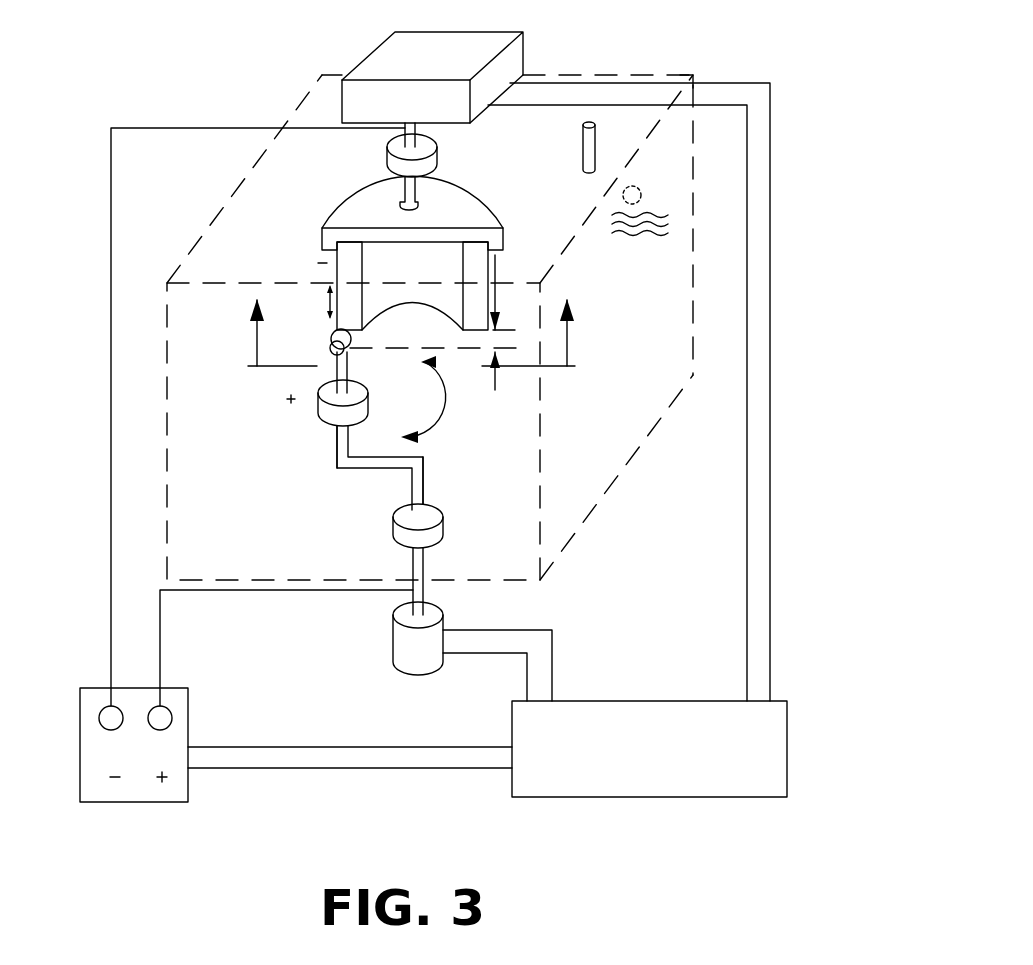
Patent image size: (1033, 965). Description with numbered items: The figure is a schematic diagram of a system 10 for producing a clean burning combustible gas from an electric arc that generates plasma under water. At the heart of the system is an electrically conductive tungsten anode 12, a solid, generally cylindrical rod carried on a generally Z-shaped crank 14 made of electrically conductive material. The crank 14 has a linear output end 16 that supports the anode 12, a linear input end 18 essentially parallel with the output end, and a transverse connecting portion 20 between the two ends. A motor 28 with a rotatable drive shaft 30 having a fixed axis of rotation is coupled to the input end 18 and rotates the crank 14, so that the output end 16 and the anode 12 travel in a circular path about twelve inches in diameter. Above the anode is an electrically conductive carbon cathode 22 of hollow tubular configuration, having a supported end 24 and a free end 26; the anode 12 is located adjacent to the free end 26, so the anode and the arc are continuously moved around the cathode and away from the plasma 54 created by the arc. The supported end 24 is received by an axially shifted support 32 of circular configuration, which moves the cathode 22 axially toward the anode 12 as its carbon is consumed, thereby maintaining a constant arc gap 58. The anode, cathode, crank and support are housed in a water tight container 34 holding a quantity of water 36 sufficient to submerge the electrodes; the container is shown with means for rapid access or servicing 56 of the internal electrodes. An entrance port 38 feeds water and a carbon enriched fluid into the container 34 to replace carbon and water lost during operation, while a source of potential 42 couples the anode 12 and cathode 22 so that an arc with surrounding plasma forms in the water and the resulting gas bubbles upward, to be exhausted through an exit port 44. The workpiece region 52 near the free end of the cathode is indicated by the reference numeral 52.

The system 10 is at (799, 113).
The anode 12 is at (443, 527).
The crank 14 is at (337, 465).
The output end 16 is at (427, 483).
The input end 18 is at (348, 368).
The connecting portion 20 is at (377, 468).
The cathode 22 is at (487, 204).
The supported end 24 is at (418, 204).
The free end 26 is at (387, 242).
The motor 28 is at (443, 625).
The drive shaft 30 is at (424, 566).
The support 32 is at (387, 145).
The container 34 is at (618, 75).
The water 36 is at (632, 237).
The entrance port 38 is at (641, 195).
The source of potential 42 is at (132, 803).
The exit port 44 is at (598, 144).
The workpiece 52 is at (356, 337).
The plasma 54 is at (331, 336).
The means for rapid access or servicing 56 is at (670, 76).
The arc gap 58 is at (495, 255).